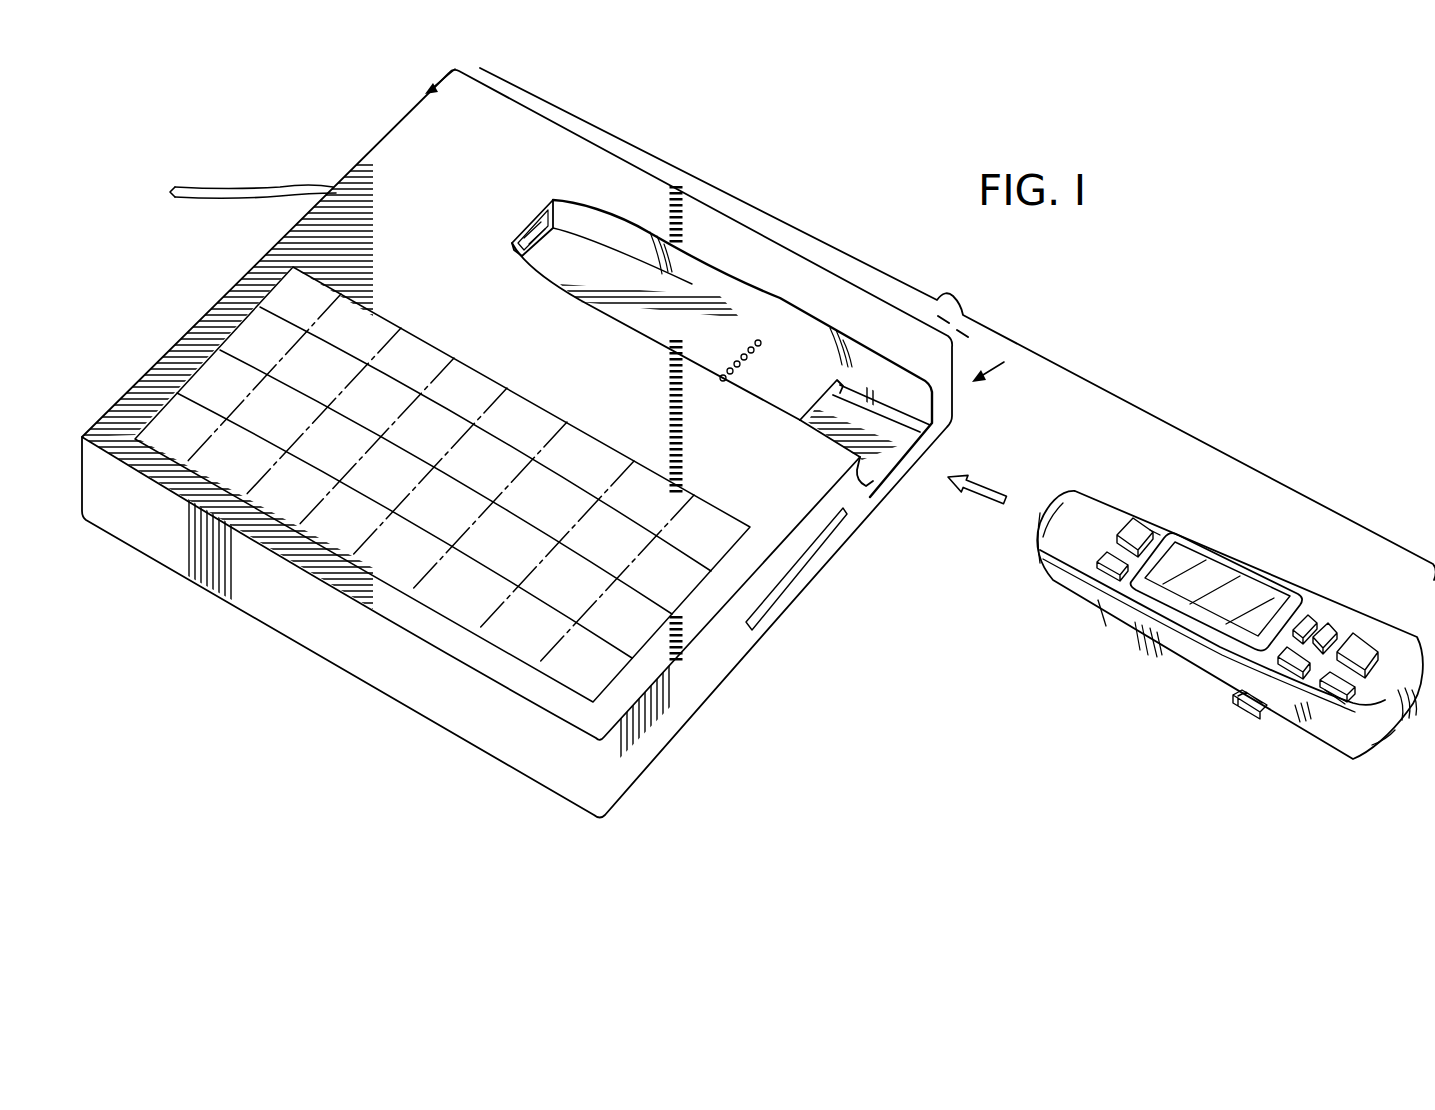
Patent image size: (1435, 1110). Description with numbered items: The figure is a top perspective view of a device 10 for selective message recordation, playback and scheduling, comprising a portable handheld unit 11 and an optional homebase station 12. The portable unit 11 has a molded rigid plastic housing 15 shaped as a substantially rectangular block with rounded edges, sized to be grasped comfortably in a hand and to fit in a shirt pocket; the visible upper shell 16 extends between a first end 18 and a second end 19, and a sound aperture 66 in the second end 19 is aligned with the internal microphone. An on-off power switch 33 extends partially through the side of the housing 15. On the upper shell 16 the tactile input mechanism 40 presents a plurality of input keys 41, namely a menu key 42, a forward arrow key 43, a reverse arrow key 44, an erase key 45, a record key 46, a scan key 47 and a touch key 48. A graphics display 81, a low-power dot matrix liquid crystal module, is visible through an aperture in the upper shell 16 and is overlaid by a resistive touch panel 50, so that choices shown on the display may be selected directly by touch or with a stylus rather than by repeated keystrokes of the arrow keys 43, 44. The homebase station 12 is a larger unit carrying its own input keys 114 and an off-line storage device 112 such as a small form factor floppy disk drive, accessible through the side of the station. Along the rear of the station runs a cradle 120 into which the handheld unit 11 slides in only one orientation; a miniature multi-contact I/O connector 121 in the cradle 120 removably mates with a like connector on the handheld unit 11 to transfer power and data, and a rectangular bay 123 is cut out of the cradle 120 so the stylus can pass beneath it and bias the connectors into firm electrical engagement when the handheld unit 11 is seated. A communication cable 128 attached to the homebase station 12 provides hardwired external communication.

The device 10 is at (946, 768).
The portable unit 11 is at (1165, 684).
The homebase station 12 is at (706, 730).
The housing 15 is at (1098, 640).
The upper shell 16 is at (1161, 522).
The first end 18 is at (1040, 515).
The second end 19 is at (1380, 732).
The on-off power switch 33 is at (1248, 710).
The tactile input mechanism 40 is at (1350, 617).
The input keys 41 is at (1326, 698).
The menu key 42 is at (1340, 700).
The forward arrow key 43 is at (1330, 625).
The reverse arrow key 44 is at (1313, 613).
The erase key 45 is at (1293, 672).
The record key 46 is at (1367, 643).
The scan key 47 is at (1137, 518).
The touch key 48 is at (1110, 567).
The resistive touch panel 50 is at (1190, 553).
The sound aperture 66 is at (1403, 723).
The graphics display 81 is at (1250, 585).
The off-line storage device 112 is at (797, 578).
The input keys 114 is at (232, 303).
The cradle 120 is at (673, 287).
The miniature multi-contact I/O connector 121 is at (757, 342).
The rectangular bay 123 is at (885, 465).
The communication cable 128 is at (252, 187).